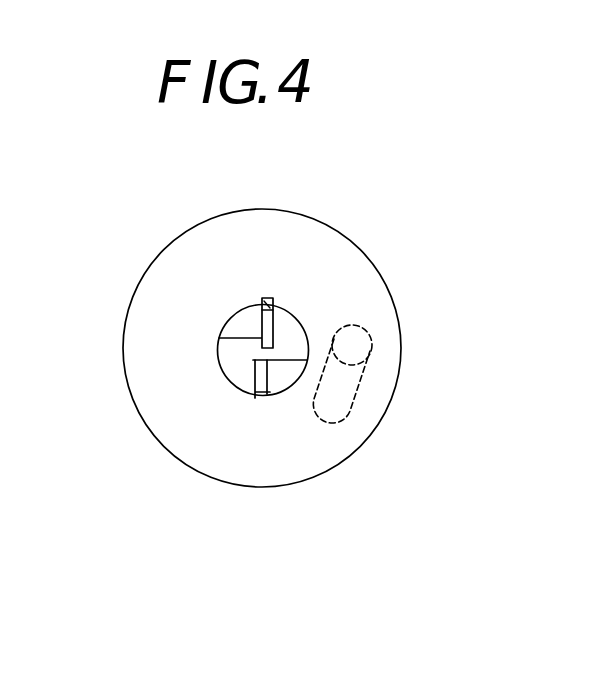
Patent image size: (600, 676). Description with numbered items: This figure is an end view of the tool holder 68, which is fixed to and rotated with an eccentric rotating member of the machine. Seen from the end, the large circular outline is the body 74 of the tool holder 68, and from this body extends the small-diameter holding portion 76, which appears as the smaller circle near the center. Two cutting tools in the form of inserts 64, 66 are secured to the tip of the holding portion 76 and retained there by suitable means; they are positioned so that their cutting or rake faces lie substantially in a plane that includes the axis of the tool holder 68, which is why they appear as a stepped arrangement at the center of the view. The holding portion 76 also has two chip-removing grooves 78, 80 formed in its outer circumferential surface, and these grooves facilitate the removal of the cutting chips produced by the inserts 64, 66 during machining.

The tool holder 68 is at (353, 236).
The small-diameter holding portion 76 is at (223, 377).
The chip-removing groove 80 is at (240, 337).
The insert 66 is at (267, 300).
The chip-removing groove 78 is at (285, 362).
The insert 64 is at (260, 398).
The body 74 is at (318, 460).